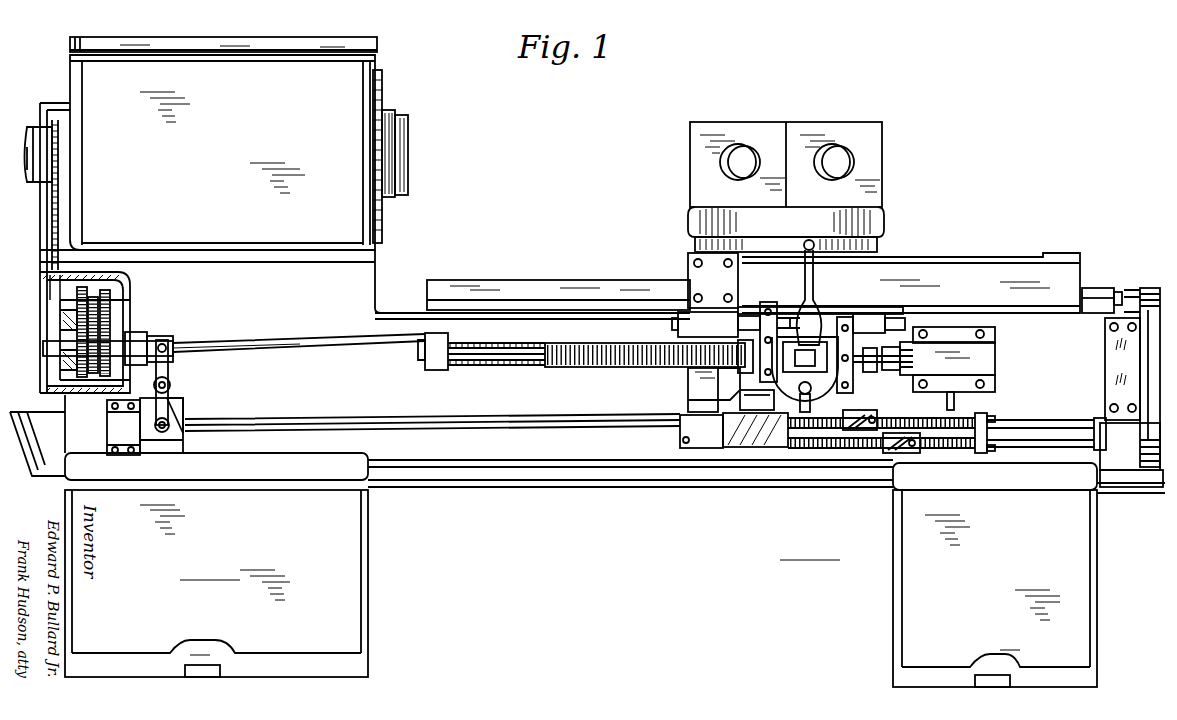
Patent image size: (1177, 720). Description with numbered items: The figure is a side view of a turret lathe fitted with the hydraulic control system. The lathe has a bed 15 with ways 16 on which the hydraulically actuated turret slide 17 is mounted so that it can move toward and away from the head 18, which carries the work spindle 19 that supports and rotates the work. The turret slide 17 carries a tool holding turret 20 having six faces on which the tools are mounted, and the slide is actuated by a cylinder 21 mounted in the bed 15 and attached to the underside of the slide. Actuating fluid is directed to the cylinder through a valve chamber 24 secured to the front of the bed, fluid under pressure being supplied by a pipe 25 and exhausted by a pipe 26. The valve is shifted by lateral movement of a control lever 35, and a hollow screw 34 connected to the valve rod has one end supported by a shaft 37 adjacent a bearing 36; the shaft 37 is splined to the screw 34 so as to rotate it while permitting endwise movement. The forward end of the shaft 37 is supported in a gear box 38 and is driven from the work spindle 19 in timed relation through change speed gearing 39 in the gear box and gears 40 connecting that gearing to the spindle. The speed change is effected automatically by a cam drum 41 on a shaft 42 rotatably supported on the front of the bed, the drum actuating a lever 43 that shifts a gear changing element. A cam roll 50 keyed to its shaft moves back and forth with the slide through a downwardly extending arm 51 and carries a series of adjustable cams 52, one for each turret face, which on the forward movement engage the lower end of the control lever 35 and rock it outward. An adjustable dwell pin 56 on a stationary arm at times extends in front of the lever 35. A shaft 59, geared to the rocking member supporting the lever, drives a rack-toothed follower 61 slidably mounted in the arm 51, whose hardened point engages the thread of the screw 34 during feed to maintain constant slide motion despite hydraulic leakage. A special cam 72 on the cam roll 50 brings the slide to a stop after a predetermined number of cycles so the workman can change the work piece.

The bed 15 is at (587, 533).
The ways 16 is at (518, 280).
The turret slide 17 is at (930, 268).
The head 18 is at (280, 42).
The work spindle 19 is at (408, 115).
The tool holding turret 20 is at (825, 123).
The cylinder 21 is at (1105, 290).
The valve chamber 24 is at (985, 355).
The pipe 25 is at (956, 402).
The pipe 26 is at (942, 411).
The screw 34 is at (626, 365).
The control lever 35 is at (815, 272).
The bearing 36 is at (425, 368).
The shaft 37 is at (268, 347).
The gear box 38 is at (130, 312).
The change speed gearing 39 is at (120, 280).
The gears 40 is at (62, 210).
The cam drum 41 is at (183, 414).
The shaft 42 is at (266, 425).
The lever 43 is at (170, 372).
The cam roll 50 is at (820, 445).
The arm 51 is at (690, 395).
The cams 52 is at (850, 415).
The dwell pin 56 is at (788, 308).
The shaft 59 is at (545, 343).
The follower 61 is at (700, 378).
The special cam 72 is at (745, 397).